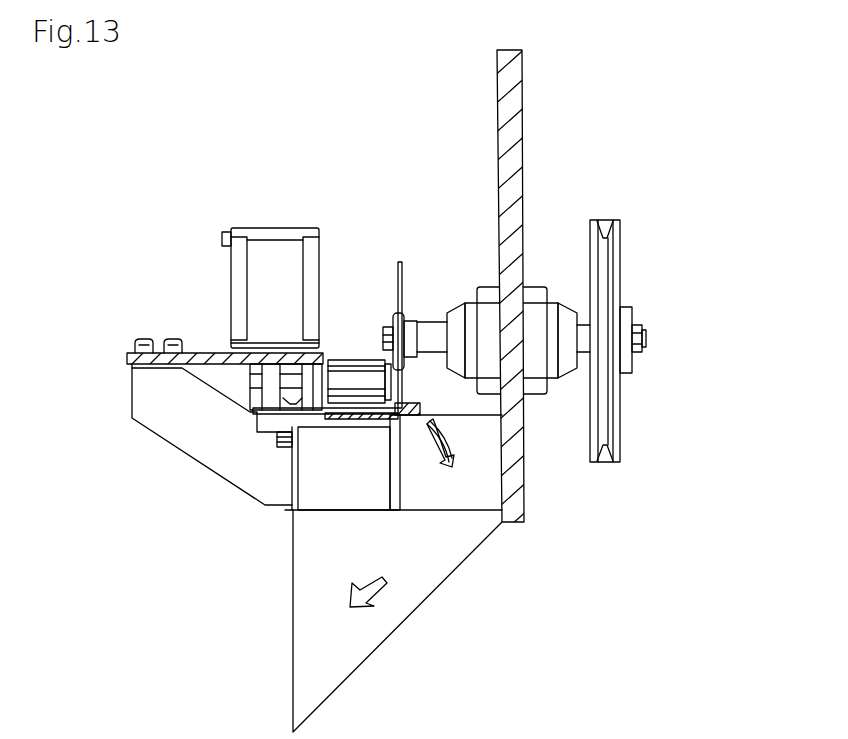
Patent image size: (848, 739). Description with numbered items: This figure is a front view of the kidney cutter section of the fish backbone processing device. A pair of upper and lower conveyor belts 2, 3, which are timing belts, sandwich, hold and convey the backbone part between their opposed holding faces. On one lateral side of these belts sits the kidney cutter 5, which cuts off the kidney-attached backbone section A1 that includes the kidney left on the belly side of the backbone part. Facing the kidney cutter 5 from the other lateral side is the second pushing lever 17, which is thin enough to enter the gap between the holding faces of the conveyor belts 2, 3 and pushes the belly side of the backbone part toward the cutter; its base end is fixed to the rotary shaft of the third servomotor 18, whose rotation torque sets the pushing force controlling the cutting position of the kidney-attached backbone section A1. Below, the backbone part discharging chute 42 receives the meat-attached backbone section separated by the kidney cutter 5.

The third servomotor 18 is at (243, 286).
The kidney cutter 5 is at (398, 284).
The upper conveyor belt 2 is at (352, 366).
The second pushing lever 17 is at (325, 414).
The lower conveyor belt 3 is at (357, 420).
The kidney-attached backbone section A1 is at (394, 420).
The backbone part discharging chute 42 is at (410, 600).